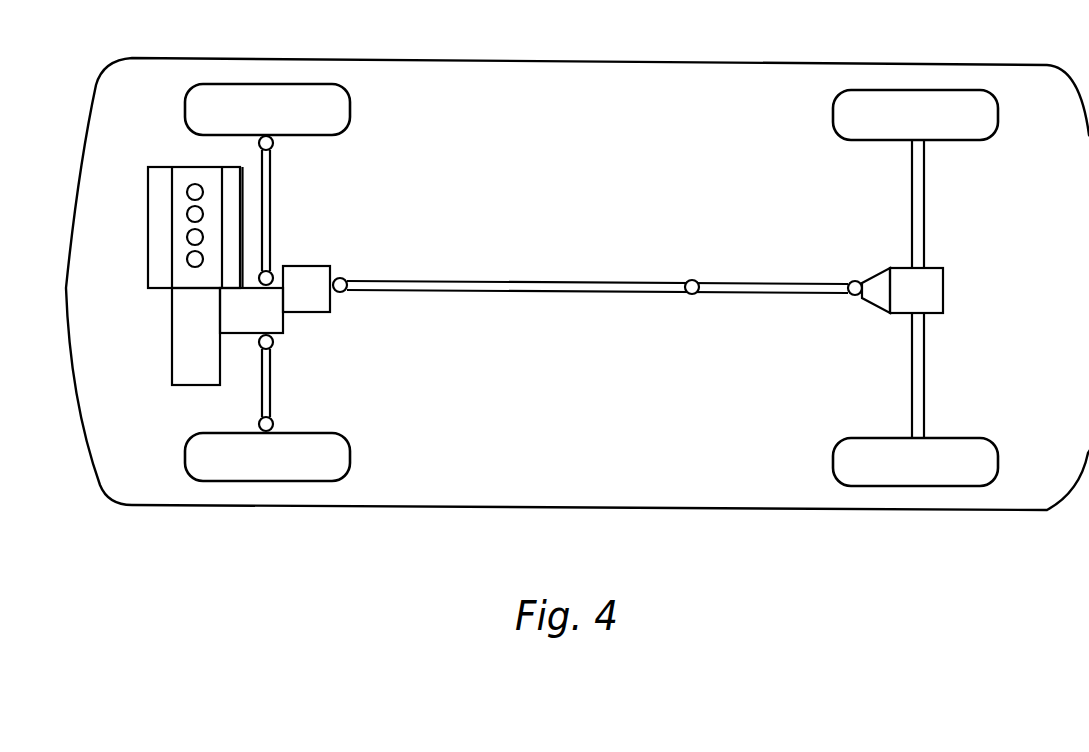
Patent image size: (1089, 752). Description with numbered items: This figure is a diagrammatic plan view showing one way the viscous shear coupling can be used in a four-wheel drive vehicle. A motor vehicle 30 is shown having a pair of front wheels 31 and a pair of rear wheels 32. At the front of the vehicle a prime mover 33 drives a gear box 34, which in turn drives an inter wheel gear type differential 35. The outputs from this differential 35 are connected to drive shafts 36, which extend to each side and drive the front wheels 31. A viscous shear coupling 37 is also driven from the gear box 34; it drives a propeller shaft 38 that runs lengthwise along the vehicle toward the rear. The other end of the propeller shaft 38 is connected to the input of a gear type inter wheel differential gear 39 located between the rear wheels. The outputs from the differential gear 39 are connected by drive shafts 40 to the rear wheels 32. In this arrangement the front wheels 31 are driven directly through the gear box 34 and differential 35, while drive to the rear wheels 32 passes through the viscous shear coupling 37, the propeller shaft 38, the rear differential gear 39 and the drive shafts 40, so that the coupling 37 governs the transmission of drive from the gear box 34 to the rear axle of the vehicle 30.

The motor vehicle 30 is at (628, 73).
The front wheels 31 is at (333, 92).
The rear wheels 32 is at (910, 102).
The prime mover 33 is at (192, 173).
The gear box 34 is at (192, 372).
The inter wheel gear type differential 35 is at (273, 322).
The drive shafts 36 is at (268, 222).
The viscous shear coupling 37 is at (318, 303).
The propeller shaft 38 is at (548, 283).
The gear type inter wheel differential gear 39 is at (933, 295).
The drive shafts 40 is at (917, 208).